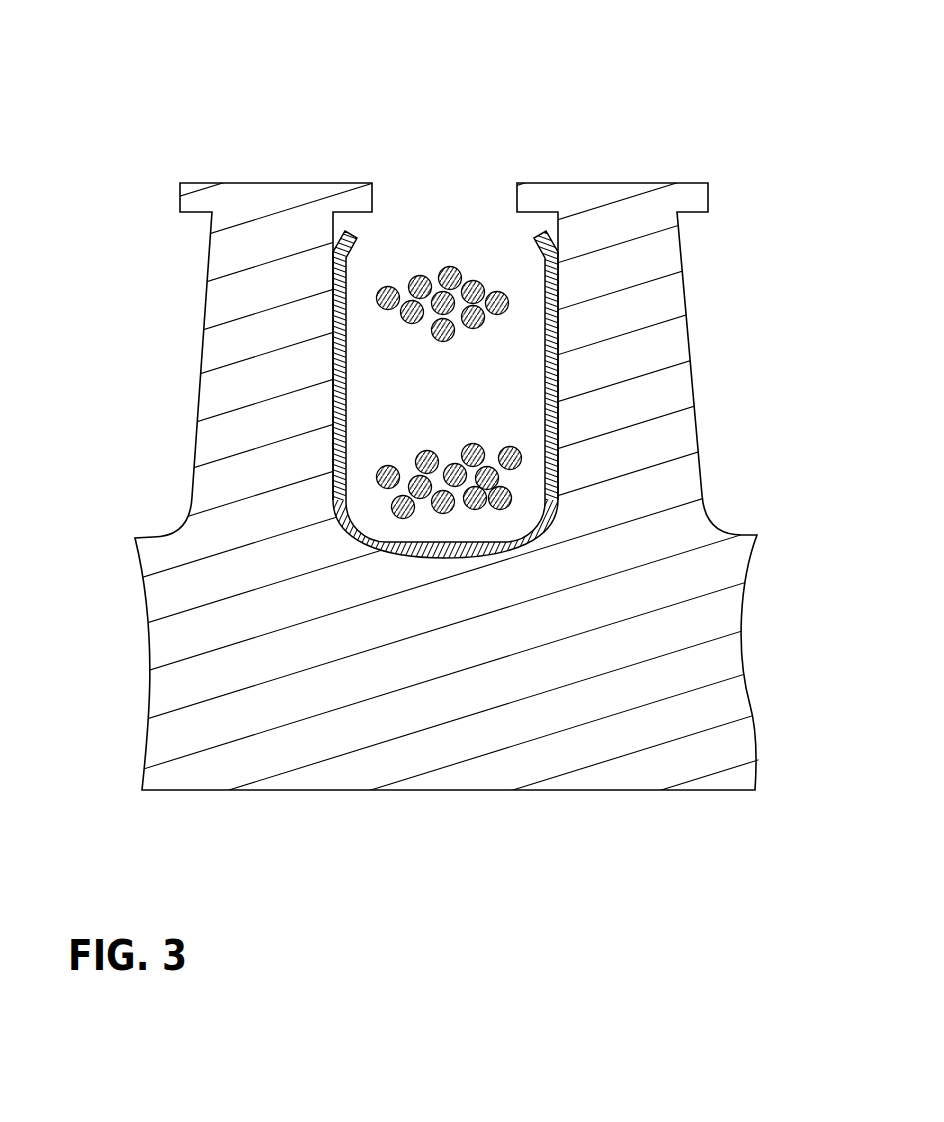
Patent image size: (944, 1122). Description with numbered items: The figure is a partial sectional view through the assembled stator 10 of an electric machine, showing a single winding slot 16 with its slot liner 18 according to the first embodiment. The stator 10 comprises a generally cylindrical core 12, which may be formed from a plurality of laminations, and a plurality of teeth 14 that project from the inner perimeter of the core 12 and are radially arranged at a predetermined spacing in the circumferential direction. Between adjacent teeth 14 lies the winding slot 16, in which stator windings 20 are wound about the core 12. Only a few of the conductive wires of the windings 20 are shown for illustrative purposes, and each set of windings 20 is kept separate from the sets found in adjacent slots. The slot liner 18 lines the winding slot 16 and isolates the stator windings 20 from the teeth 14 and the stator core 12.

The stator 10 is at (303, 34).
The core 12 is at (452, 730).
The teeth 14 is at (238, 350).
The winding slot 16 is at (123, 178).
The slot liner 18 is at (566, 378).
The stator windings 20 is at (442, 262).